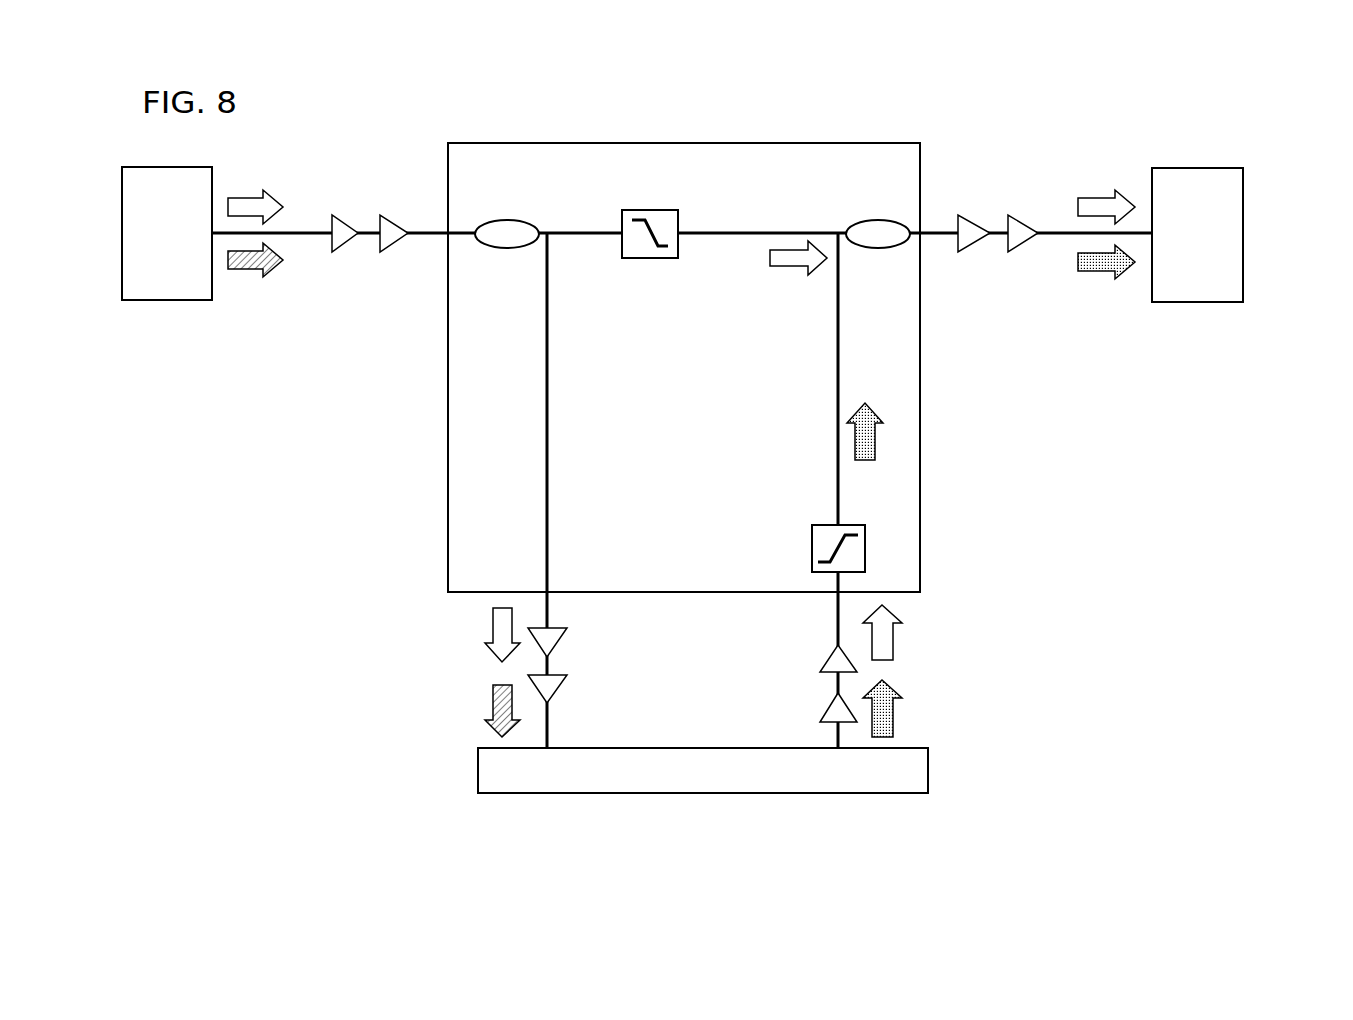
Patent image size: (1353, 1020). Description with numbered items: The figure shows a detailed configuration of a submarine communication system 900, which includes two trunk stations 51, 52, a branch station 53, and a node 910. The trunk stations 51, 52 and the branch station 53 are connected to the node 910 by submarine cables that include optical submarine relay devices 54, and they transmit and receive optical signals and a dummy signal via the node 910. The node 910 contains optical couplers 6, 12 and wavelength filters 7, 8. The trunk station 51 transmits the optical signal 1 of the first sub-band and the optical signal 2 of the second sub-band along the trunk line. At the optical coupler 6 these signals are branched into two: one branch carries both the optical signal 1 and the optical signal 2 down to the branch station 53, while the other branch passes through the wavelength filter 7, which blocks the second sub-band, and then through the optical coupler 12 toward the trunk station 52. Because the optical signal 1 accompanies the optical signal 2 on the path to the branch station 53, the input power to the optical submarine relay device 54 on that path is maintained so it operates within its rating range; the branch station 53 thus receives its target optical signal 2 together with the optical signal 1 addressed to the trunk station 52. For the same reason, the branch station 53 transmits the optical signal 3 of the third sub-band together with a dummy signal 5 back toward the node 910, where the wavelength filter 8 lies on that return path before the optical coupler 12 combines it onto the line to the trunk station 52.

The optical signal 1 is at (238, 191).
The optical signal 2 is at (250, 267).
The optical signal 3 is at (1088, 276).
The dummy signal 5 is at (895, 642).
The optical coupler 6 is at (508, 220).
The wavelength filter 7 is at (632, 209).
The wavelength filter 8 is at (866, 546).
The optical coupler 12 is at (872, 220).
The trunk station 51 is at (150, 300).
The trunk station 52 is at (1180, 302).
The branch station 53 is at (928, 775).
The optical submarine relay device 54 is at (828, 648).
The submarine communication system 900 is at (884, 113).
The node 910 is at (920, 363).